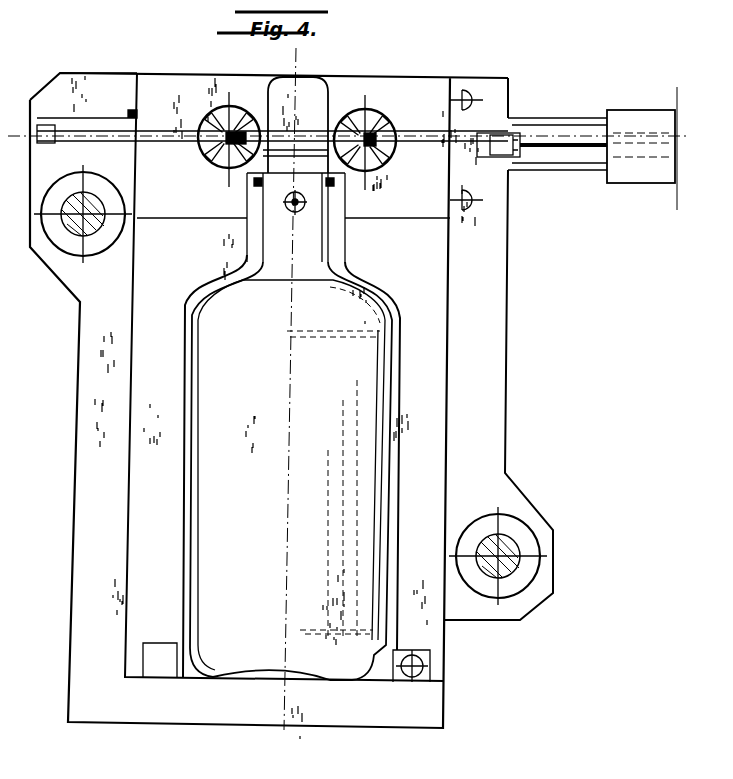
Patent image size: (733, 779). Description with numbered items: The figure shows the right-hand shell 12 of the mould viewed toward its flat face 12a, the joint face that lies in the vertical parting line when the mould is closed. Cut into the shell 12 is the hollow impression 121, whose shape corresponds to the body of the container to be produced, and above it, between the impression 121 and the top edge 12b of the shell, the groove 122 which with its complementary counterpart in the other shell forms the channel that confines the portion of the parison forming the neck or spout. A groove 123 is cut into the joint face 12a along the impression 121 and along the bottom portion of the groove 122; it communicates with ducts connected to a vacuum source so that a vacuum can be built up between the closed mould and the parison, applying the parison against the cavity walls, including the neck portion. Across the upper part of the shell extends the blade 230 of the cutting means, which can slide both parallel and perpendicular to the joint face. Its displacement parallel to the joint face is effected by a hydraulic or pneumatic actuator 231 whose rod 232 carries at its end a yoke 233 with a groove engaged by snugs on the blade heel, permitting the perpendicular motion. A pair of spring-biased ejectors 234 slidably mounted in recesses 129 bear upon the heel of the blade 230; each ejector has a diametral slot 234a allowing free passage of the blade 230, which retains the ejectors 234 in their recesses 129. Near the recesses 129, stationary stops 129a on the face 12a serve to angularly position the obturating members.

The shell 12 is at (459, 74).
The flat face 12a is at (321, 217).
The top edge 12b is at (192, 72).
The impression 121 is at (291, 389).
The groove 122 is at (290, 232).
The groove 123 is at (247, 231).
The recesses 129 is at (383, 114).
The stationary stops 129a is at (222, 118).
The blade 230 is at (160, 133).
The hydraulic or pneumatic actuator 231 is at (633, 133).
The rod 232 is at (547, 137).
The yoke 233 is at (507, 137).
The ejectors 234 is at (357, 112).
The diametral slot 234a is at (236, 153).